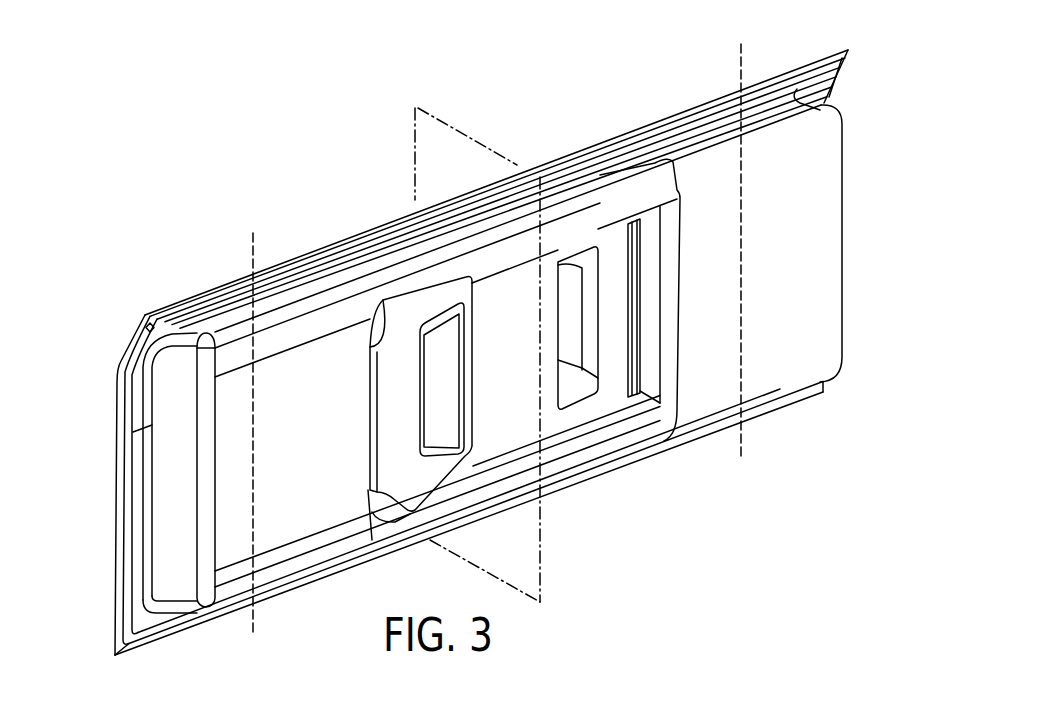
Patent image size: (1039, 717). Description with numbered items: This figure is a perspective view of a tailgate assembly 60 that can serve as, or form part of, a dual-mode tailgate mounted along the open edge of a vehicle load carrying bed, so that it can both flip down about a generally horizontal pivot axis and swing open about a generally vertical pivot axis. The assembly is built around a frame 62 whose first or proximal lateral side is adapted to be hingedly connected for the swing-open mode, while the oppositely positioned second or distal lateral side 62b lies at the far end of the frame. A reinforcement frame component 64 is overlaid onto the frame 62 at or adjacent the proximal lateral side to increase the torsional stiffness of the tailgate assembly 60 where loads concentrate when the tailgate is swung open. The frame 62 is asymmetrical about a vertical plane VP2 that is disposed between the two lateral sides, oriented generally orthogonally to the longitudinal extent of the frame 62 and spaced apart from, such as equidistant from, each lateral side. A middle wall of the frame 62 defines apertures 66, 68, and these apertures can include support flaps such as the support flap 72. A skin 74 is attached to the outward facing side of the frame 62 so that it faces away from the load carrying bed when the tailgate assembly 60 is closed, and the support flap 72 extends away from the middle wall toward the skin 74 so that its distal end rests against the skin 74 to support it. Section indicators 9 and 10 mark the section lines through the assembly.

The tailgate assembly 60 is at (143, 682).
The frame 62 is at (625, 450).
The second or distal lateral side 62b is at (161, 509).
The reinforcement frame component 64 is at (813, 250).
The aperture 66 is at (425, 392).
The aperture 68 is at (560, 322).
The support flap 72 is at (568, 282).
The skin 74 is at (146, 311).
The section line 9- 9 is at (253, 233).
The section line 10- 10 is at (741, 46).
The vertical plane VP2 is at (412, 128).